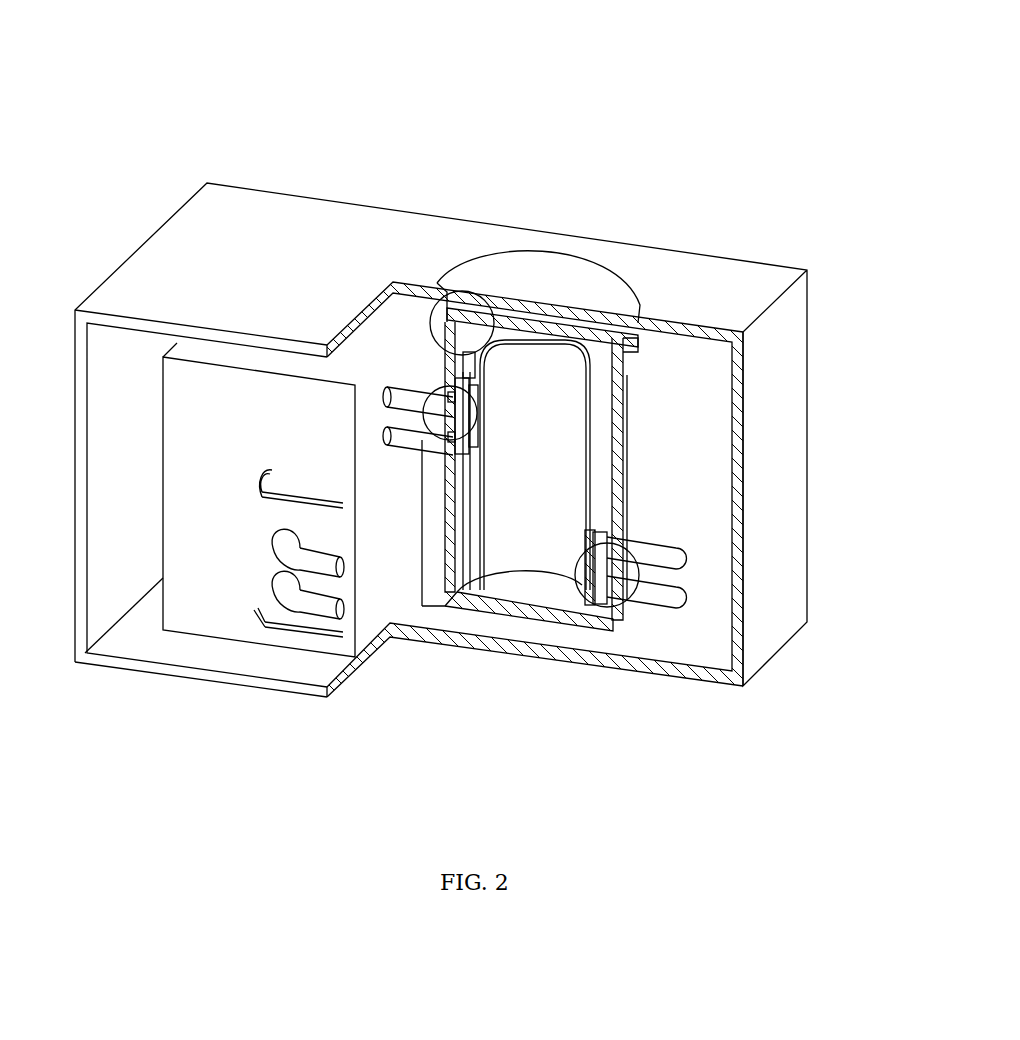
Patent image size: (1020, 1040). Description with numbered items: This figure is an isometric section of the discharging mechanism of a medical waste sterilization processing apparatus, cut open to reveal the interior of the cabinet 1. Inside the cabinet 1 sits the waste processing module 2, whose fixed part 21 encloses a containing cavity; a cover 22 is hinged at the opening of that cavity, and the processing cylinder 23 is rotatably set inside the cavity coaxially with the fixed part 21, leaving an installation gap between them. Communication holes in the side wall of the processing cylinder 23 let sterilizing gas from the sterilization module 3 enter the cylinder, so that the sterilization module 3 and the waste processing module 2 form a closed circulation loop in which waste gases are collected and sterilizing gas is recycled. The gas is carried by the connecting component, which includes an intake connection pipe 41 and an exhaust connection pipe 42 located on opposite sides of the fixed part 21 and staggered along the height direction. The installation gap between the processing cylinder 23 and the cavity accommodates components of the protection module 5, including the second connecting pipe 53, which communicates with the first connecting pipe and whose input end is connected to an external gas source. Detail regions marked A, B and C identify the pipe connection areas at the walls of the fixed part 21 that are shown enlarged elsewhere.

The cabinet 1 is at (794, 412).
The waste processing module 2 is at (650, 413).
The fixed part 21 is at (615, 390).
The cover 22 is at (530, 318).
The processing cylinder 23 is at (585, 426).
The sterilization module 3 is at (220, 408).
The intake connection pipe 41 is at (386, 400).
The exhaust connection pipe 42 is at (320, 582).
The protection module 5 is at (453, 406).
The second connecting pipe 53 is at (277, 502).
The detail A is at (470, 448).
The detail B is at (640, 540).
The detail C is at (438, 298).